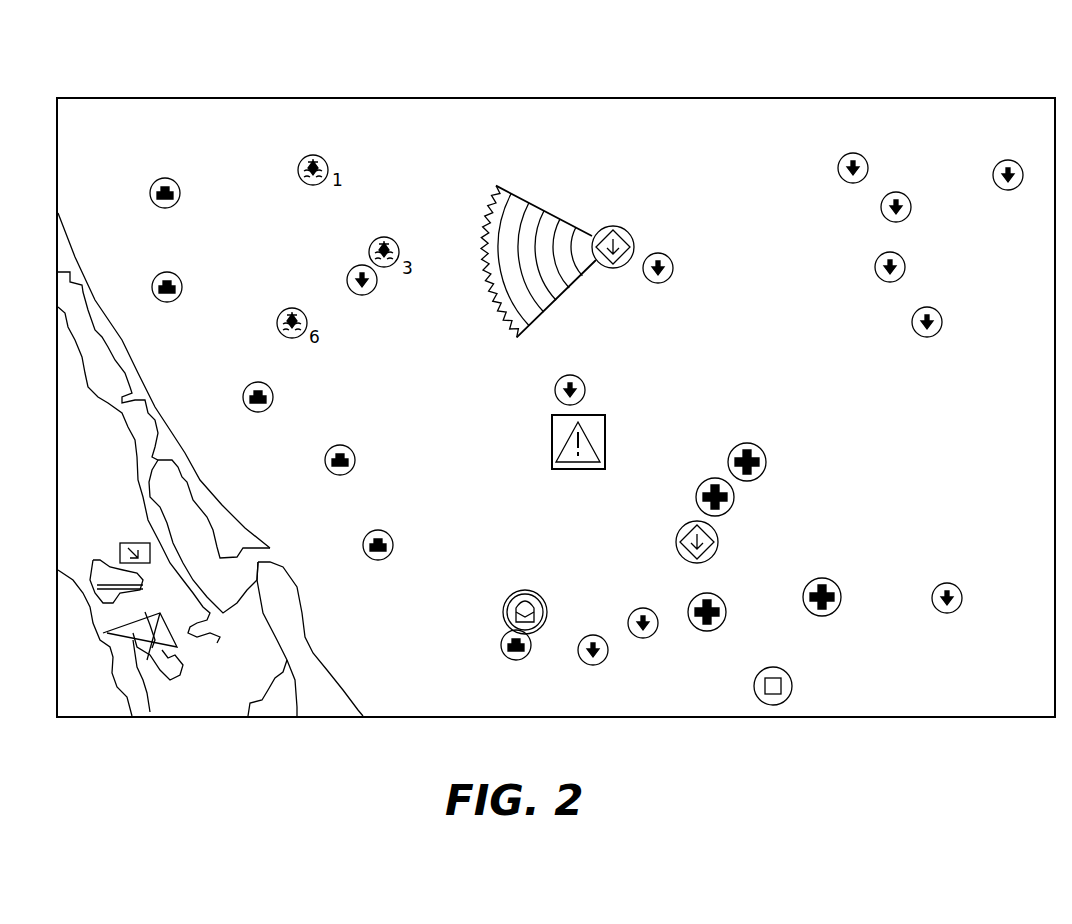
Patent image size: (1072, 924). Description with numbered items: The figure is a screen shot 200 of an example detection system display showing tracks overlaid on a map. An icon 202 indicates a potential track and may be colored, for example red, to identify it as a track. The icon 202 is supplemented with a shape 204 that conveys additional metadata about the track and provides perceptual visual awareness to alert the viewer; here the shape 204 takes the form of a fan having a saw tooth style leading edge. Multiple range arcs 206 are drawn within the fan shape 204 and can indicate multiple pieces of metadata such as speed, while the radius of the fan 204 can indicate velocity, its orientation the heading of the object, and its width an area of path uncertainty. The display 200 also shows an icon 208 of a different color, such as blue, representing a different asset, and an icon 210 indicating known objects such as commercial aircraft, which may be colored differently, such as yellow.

The screen shot 200 is at (168, 62).
The icon 202 is at (615, 225).
The shape 204 is at (493, 210).
The range arcs 206 is at (545, 245).
The icon 208 is at (851, 152).
The icon 210 is at (822, 577).